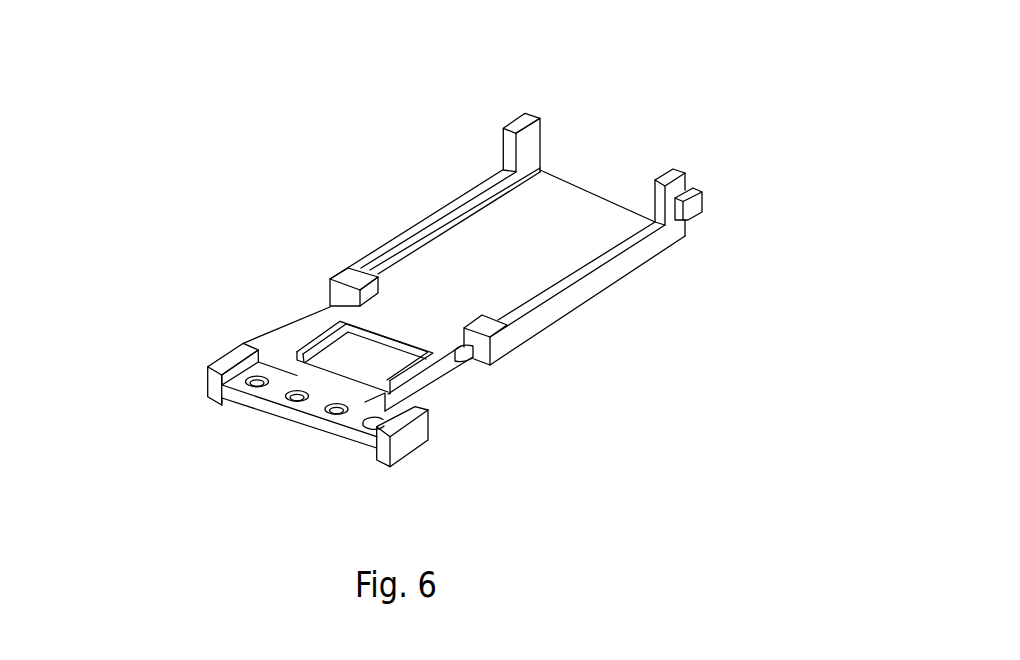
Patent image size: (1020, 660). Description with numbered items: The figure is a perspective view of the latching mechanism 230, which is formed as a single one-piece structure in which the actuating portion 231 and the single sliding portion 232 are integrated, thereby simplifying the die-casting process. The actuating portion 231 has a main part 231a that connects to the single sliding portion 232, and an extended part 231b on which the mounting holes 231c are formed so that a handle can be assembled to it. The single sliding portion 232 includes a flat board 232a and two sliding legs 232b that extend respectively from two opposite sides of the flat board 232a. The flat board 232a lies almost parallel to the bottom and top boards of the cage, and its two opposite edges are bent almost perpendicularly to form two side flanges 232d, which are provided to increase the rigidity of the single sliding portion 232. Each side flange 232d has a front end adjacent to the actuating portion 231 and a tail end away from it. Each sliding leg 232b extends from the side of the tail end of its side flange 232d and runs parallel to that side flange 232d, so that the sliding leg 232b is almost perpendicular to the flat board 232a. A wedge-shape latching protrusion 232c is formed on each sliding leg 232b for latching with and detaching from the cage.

The latching mechanism 230 is at (112, 53).
The actuating portion 231 is at (335, 383).
The main part 231a is at (323, 337).
The extended part 231b is at (277, 375).
The mounting holes 231c is at (337, 411).
The single sliding portion 232 is at (575, 243).
The flat board 232a is at (570, 253).
The sliding legs 232b is at (527, 130).
The wedge-shape latching protrusion 232c is at (689, 204).
The side flanges 232d is at (415, 228).